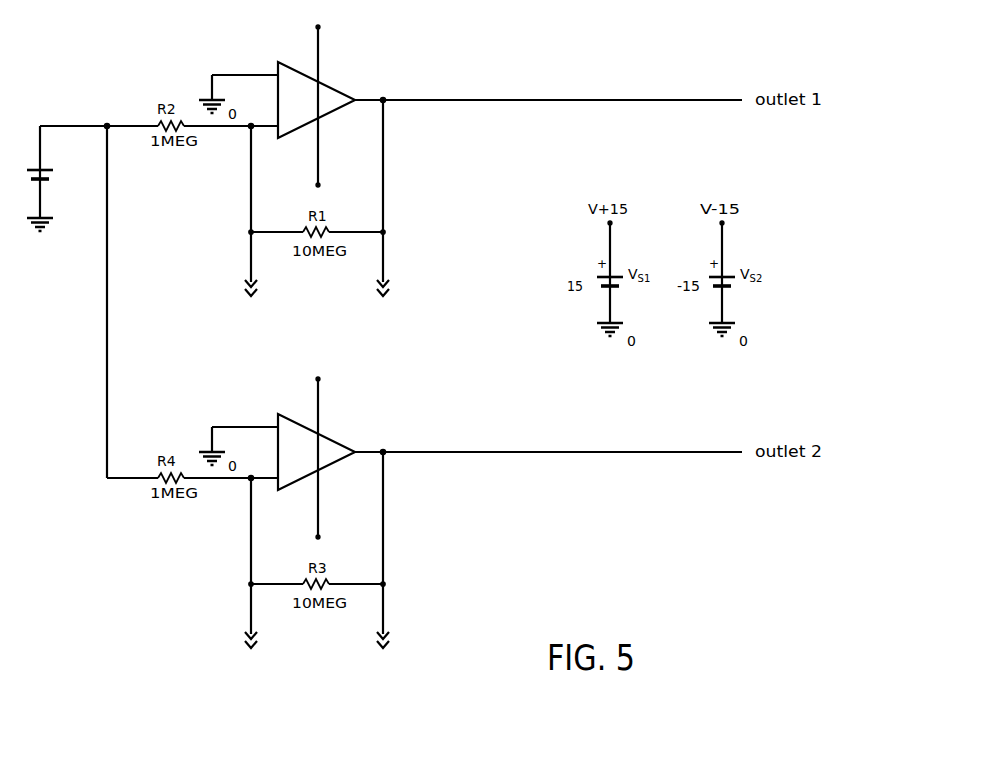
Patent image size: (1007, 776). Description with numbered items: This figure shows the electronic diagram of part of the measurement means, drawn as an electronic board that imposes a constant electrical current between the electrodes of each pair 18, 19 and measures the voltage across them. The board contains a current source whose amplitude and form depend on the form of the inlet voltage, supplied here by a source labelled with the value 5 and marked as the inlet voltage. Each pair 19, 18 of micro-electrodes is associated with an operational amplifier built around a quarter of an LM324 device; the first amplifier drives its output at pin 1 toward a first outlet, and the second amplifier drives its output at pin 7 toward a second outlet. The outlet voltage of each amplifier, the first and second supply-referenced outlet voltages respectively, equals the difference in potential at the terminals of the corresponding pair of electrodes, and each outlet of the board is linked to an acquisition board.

The pair of electrodes 19 is at (369, 302).
The pair of electrodes 18 is at (369, 654).
The output pin 1 of op-amp U2A 1 is at (347, 105).
The output pin 7 of op-amp U2B 7 is at (347, 457).
The voltage source Ve (5 V) 5 is at (45, 183).